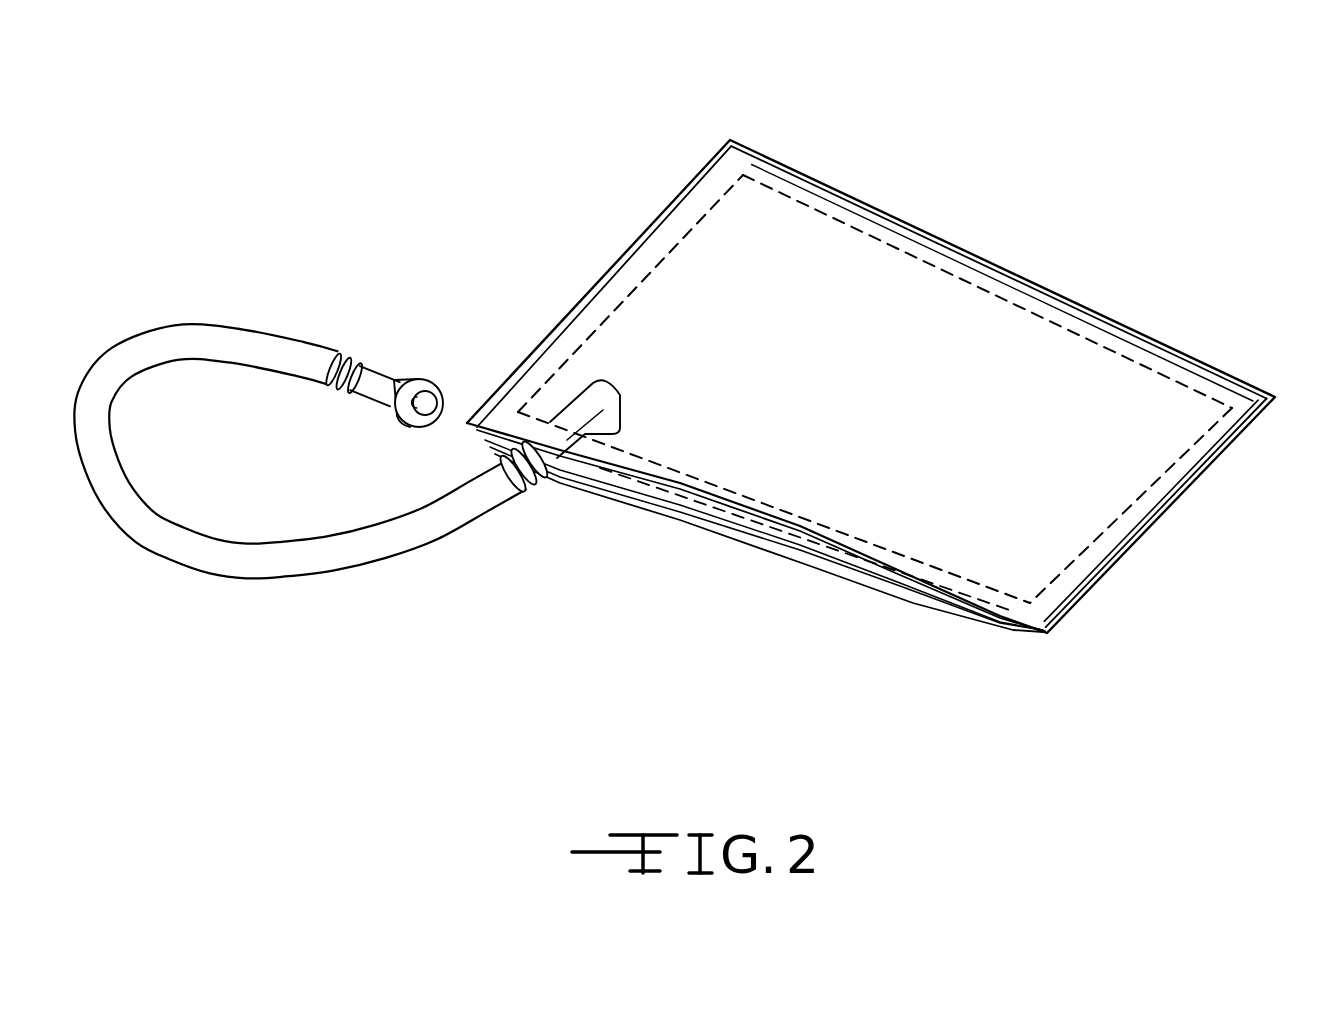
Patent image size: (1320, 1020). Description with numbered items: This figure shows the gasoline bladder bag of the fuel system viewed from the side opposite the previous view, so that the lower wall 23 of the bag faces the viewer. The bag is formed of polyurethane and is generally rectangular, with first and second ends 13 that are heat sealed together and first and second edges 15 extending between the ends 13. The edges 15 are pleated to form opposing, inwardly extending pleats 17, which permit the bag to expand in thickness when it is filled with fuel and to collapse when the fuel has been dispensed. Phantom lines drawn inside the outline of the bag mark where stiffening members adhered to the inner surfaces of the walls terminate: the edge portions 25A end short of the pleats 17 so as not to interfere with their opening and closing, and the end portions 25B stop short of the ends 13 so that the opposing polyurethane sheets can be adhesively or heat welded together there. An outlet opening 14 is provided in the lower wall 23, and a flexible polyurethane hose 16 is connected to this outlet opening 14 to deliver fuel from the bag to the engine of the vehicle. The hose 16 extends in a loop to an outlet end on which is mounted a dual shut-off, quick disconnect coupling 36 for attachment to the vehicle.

The first and second ends 13 is at (583, 302).
The outlet opening 14 is at (625, 433).
The first and second edges 15 is at (930, 230).
The hose 16 is at (298, 577).
The pleats 17 is at (710, 510).
The lower wall 23 is at (851, 403).
The edge portions 25A is at (1093, 303).
The end portions 25B is at (640, 252).
The dual shut-off, quick disconnect coupling 36 is at (417, 378).